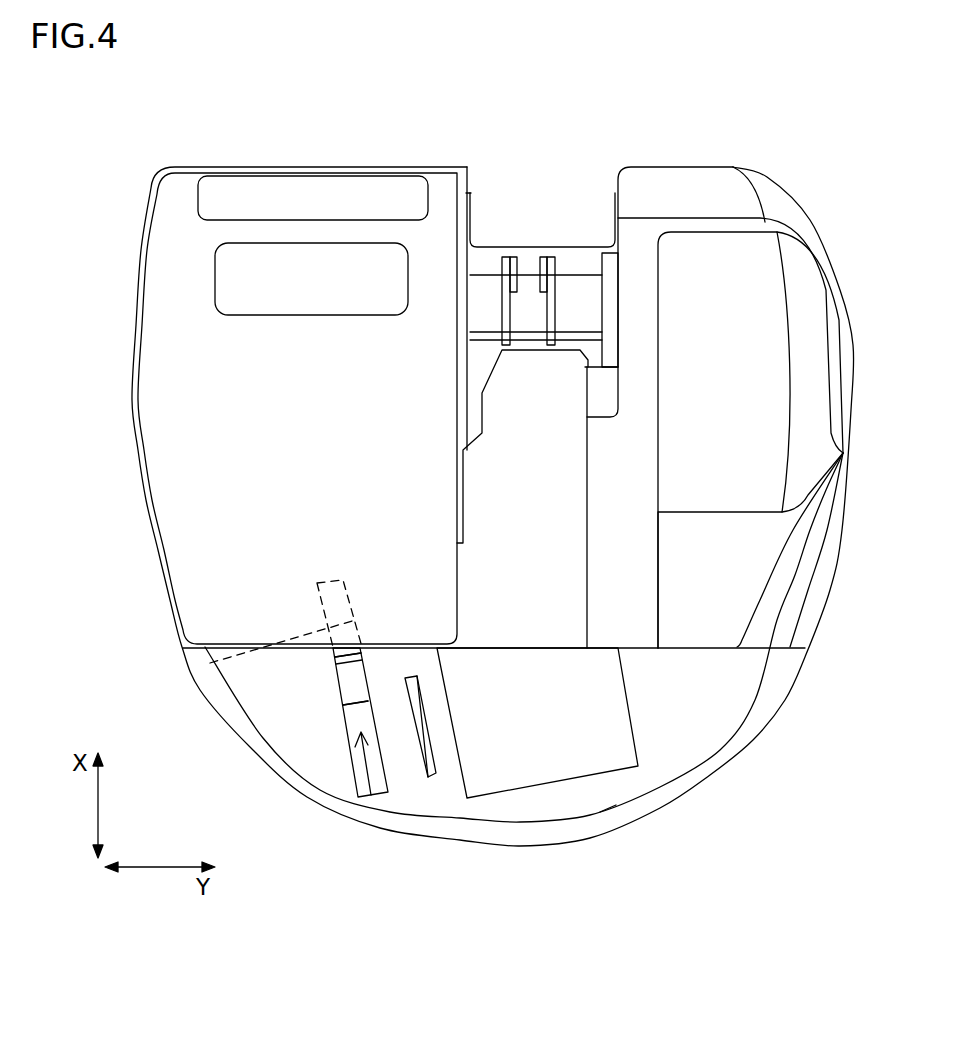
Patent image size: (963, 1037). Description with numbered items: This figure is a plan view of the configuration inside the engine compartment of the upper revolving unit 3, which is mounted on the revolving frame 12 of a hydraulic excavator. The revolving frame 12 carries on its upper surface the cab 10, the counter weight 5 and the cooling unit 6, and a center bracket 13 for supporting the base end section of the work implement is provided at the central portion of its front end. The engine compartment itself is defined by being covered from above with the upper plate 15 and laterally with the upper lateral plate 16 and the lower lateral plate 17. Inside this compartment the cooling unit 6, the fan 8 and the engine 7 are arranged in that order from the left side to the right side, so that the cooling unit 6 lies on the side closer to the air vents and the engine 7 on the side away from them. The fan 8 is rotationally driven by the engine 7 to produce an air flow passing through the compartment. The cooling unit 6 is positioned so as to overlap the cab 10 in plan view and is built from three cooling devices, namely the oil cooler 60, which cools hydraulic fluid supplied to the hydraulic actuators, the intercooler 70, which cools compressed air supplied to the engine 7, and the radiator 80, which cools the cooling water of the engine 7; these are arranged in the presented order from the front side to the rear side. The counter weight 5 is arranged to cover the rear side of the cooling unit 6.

The upper revolving unit 3 is at (775, 130).
The counter weight 5 is at (608, 815).
The cooling unit 6 is at (371, 793).
The engine 7 is at (550, 725).
The fan 8 is at (430, 778).
The cab 10 is at (220, 417).
The revolving frame 12 is at (573, 263).
The center bracket 13 is at (527, 295).
The upper plate 15 is at (672, 698).
The upper lateral plate 16 is at (708, 751).
The lower lateral plate 17 is at (688, 793).
The oil cooler 60 is at (197, 671).
The intercooler 70 is at (350, 682).
The radiator 80 is at (358, 718).